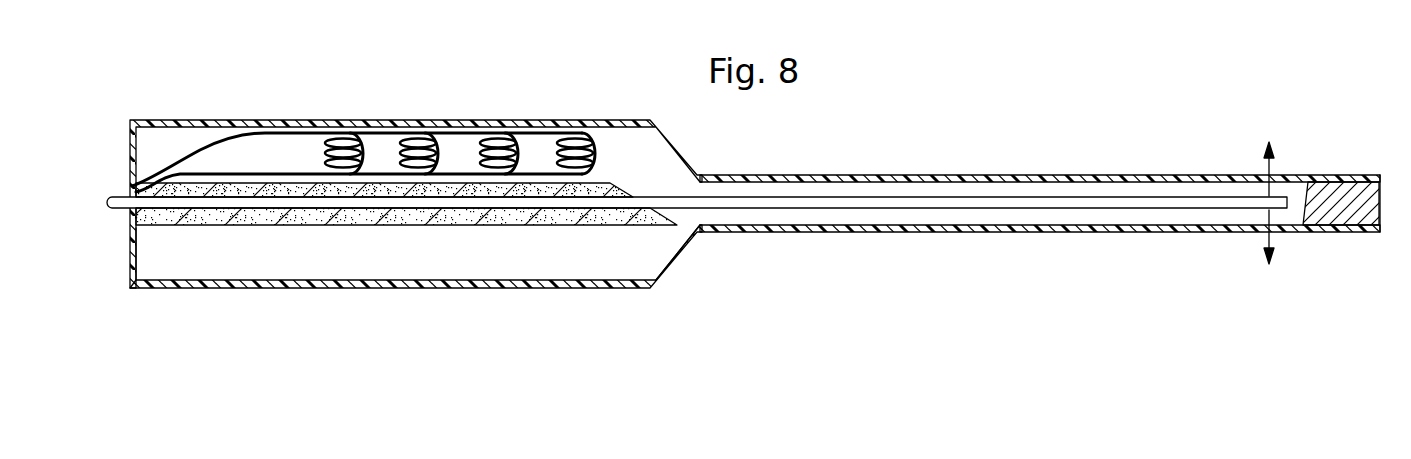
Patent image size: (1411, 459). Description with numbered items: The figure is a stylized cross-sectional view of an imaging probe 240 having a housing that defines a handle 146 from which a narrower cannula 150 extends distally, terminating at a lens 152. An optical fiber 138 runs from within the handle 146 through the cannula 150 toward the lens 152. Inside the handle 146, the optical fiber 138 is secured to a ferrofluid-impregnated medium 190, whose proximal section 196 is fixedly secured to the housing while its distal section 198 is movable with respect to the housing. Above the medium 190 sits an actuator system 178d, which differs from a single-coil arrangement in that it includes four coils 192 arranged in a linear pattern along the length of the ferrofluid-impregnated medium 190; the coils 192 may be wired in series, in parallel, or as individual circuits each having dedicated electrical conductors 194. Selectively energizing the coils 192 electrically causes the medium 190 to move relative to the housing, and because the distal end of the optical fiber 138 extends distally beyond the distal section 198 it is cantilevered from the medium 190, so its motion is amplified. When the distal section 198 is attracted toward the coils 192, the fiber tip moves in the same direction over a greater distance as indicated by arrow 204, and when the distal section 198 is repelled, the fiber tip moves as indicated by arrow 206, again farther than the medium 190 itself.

The imaging probe 240 is at (914, 136).
The handle 146 is at (263, 289).
The cannula 150 is at (1056, 234).
The lens 152 is at (1343, 188).
The optical fiber 138 is at (1078, 197).
The ferrofluid-impregnated medium 190 is at (377, 228).
The actuator system 178d is at (423, 236).
The electrical conductors 194 is at (197, 140).
The coils 192 is at (318, 133).
The proximal section 196 is at (143, 232).
The distal section 198 is at (652, 235).
The arrow 204 is at (1265, 169).
The arrow 206 is at (1265, 241).